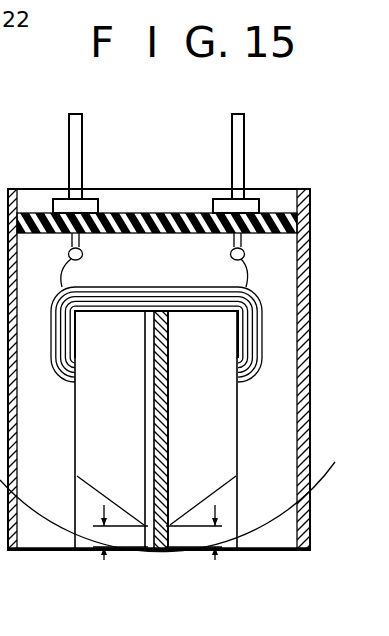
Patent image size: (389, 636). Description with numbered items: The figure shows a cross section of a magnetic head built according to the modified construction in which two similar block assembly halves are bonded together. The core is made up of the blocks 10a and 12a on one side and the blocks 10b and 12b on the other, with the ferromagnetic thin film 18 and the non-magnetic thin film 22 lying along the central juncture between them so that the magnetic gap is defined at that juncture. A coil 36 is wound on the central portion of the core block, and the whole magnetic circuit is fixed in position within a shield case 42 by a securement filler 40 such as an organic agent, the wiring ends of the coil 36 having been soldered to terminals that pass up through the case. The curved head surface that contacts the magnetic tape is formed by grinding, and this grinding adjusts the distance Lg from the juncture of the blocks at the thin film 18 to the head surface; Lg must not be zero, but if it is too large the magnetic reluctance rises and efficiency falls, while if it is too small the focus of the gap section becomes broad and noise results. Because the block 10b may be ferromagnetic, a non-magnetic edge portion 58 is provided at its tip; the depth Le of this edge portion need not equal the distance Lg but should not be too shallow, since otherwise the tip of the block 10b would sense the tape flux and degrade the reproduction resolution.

The block 10a is at (228, 447).
The block 10b is at (90, 450).
The block 12a is at (235, 497).
The block 12b is at (76, 498).
The thin film 18 is at (166, 425).
The non-magnetic thin film 22 is at (147, 426).
The coil 36 is at (128, 288).
The securement filler 40 is at (280, 392).
The shield case 42 is at (305, 322).
The non-magnetic edge portion 58 is at (144, 552).
The depth of the edge portion Le is at (102, 538).
The distance from juncture to head surface Lg is at (216, 538).